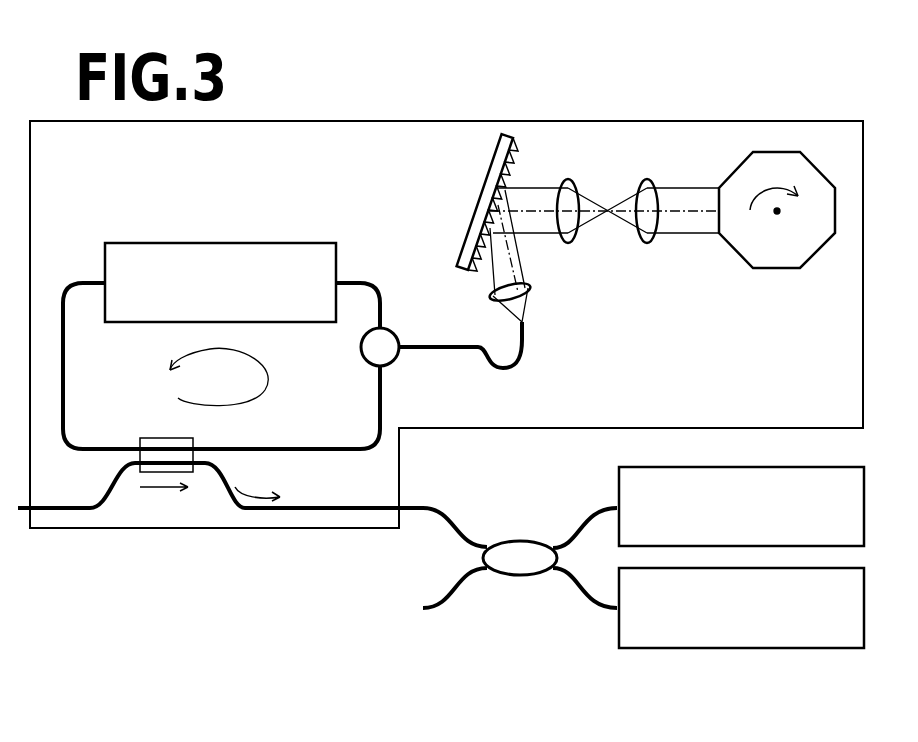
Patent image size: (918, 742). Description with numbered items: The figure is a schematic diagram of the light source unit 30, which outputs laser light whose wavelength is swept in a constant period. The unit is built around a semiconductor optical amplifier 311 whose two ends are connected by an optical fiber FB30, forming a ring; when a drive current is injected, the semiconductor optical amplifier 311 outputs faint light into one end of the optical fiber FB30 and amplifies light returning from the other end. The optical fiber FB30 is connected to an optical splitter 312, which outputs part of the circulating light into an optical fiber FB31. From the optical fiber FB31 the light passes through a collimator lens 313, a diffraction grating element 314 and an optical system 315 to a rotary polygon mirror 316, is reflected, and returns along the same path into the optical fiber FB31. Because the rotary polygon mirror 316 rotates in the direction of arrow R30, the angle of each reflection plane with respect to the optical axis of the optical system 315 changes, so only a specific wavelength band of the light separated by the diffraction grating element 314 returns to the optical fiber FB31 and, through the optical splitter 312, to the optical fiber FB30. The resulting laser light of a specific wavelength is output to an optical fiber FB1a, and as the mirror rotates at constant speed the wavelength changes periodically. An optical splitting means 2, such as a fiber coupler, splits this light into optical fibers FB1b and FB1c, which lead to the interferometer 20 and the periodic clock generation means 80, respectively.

The light source unit 30 is at (455, 430).
The optical fiber FB30 is at (87, 283).
The semiconductor optical amplifier 311 is at (262, 243).
The optical splitter 312 is at (383, 368).
The optical fiber FB31 is at (527, 347).
The collimator lens 313 is at (492, 298).
The diffraction grating element 314 is at (498, 151).
The optical system 315 is at (568, 243).
The rotary polygon mirror 316 is at (780, 235).
The direction of arrow R30 is at (774, 185).
The optical fiber FB1a is at (352, 511).
The optical splitting means 2 is at (523, 544).
The optical fiber FB1c is at (593, 515).
The optical fiber FB1b is at (590, 600).
The periodic clock generation means 80 is at (752, 467).
The interferometer 20 is at (752, 648).